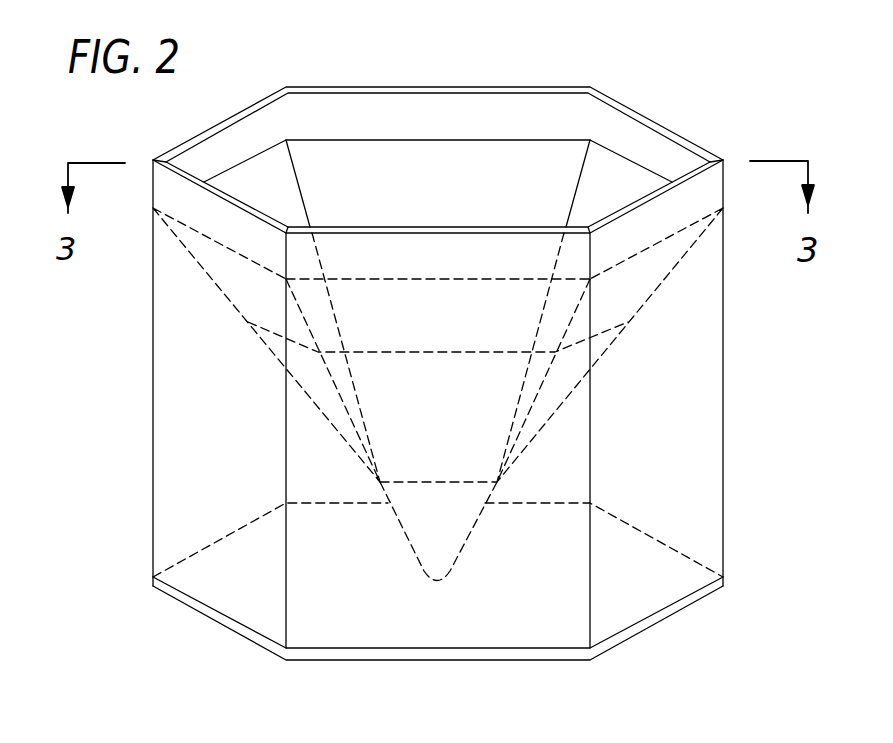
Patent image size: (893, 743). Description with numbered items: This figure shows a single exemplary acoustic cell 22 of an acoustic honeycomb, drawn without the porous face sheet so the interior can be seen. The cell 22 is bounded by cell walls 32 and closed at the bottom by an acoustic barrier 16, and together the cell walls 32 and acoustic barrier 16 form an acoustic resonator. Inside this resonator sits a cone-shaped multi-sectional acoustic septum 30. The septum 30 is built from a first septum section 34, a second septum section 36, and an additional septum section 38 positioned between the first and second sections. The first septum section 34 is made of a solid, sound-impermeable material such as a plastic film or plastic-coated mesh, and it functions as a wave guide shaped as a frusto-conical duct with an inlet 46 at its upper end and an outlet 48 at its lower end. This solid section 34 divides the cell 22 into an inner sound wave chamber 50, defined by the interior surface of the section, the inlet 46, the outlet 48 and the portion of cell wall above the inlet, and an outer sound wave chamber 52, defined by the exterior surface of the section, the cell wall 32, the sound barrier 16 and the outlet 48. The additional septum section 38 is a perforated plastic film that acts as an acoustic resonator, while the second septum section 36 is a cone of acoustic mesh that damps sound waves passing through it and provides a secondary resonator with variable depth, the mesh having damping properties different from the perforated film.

The acoustic barrier 16 is at (683, 608).
The cell 22 is at (449, 330).
The multi-sectional acoustic septum 30 is at (627, 303).
The cell wall 32 is at (705, 403).
The first septum section 34 is at (250, 297).
The second septum section 36 is at (472, 525).
The additional septum section 38 is at (306, 358).
The inlet 46 is at (498, 162).
The outlet 48 is at (408, 305).
The inner sound wave chamber 50 is at (406, 152).
The outer sound wave chamber 52 is at (174, 272).